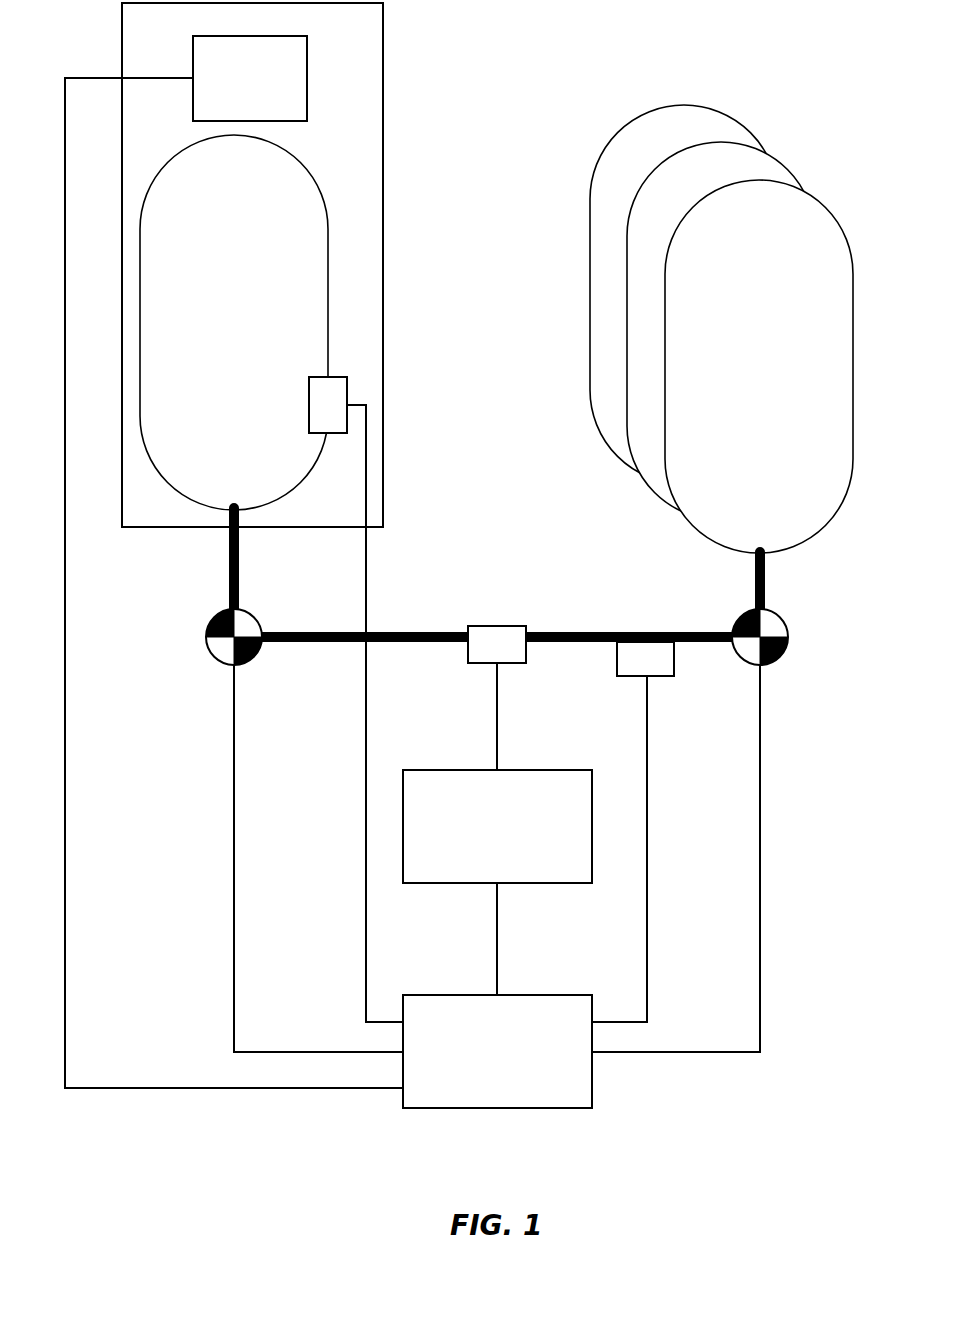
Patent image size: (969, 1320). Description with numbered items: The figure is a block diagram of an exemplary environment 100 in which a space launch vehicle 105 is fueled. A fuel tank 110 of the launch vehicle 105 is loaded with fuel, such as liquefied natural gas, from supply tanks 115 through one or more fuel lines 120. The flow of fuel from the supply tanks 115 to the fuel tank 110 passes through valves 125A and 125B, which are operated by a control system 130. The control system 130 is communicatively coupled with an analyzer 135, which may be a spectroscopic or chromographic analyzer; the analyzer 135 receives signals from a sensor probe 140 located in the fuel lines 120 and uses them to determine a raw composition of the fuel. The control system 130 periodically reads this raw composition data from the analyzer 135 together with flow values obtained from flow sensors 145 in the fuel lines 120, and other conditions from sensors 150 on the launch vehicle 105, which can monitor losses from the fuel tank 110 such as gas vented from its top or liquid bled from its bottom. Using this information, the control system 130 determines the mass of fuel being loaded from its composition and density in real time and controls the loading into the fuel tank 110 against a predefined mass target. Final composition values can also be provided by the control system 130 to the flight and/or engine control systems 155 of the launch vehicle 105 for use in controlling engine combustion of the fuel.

The environment 100 is at (522, 82).
The space launch vehicle 105 is at (252, 265).
The fuel tank 110 is at (234, 322).
The supply tanks 115 is at (721, 329).
The fuel lines 120 is at (228, 580).
The valve 125A is at (213, 655).
The valve 125B is at (786, 648).
The control system 130 is at (497, 1051).
The analyzer 135 is at (497, 882).
The sensor probe 140 is at (500, 626).
The flow sensors 145 is at (663, 677).
The sensors 150 is at (347, 382).
The flight and/or engine control systems 155 is at (307, 75).